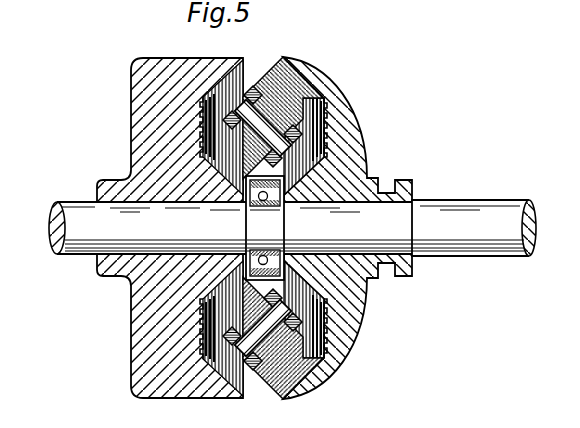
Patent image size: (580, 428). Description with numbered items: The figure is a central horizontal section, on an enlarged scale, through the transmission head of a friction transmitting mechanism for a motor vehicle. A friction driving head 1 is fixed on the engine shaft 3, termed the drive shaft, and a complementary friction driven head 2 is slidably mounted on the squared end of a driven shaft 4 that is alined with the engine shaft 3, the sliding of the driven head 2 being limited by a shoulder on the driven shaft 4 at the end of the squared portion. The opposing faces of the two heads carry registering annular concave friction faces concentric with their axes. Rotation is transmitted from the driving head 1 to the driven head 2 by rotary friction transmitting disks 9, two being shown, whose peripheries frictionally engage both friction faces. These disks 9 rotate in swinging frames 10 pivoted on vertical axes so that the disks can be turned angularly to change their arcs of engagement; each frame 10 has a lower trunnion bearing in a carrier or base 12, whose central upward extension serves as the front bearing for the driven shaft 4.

The friction driving head 1 is at (139, 95).
The friction driven head 2 is at (336, 86).
The engine shaft 3 is at (73, 255).
The driven shaft 4 is at (484, 252).
The rotary friction transmitting disks 9 is at (279, 84).
The swinging frames 10 is at (250, 88).
The carrier or base 12 is at (291, 252).